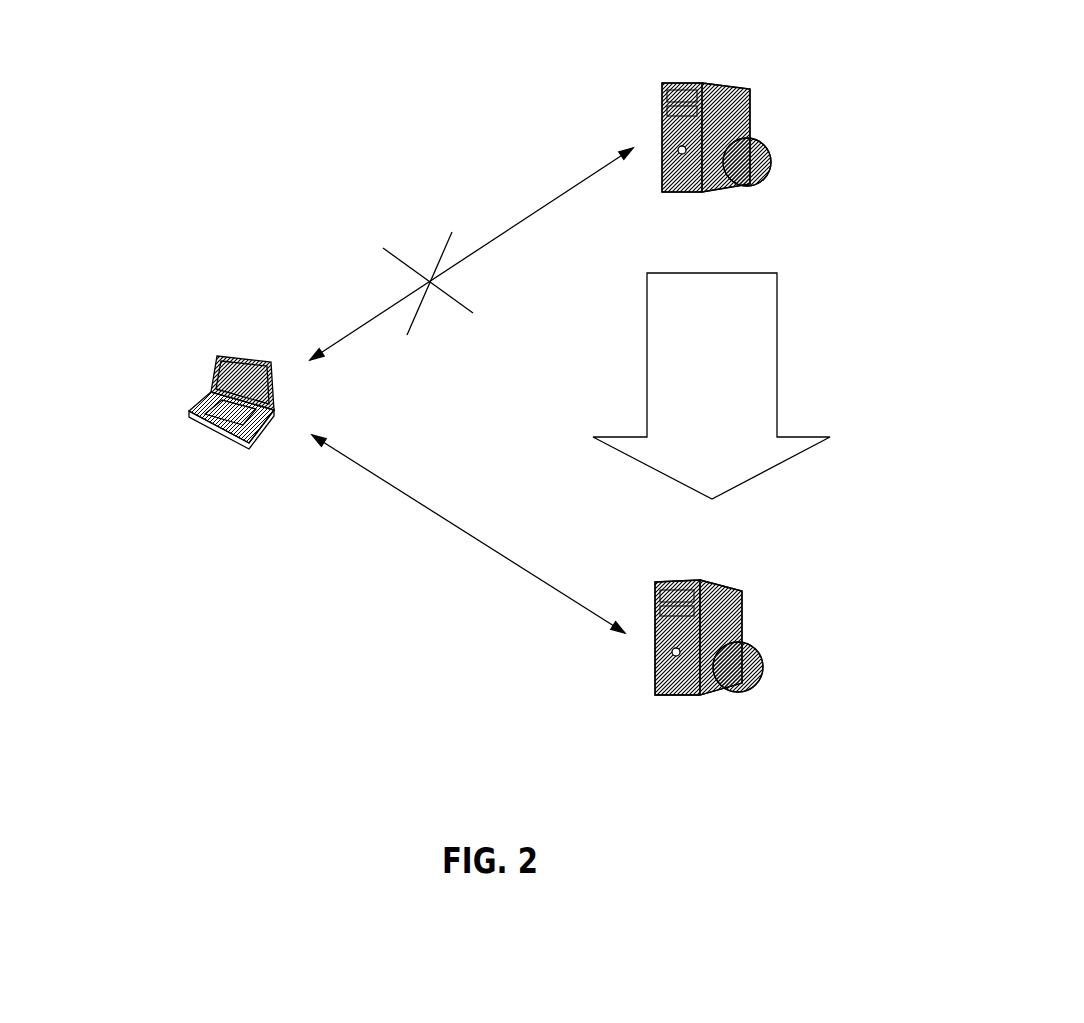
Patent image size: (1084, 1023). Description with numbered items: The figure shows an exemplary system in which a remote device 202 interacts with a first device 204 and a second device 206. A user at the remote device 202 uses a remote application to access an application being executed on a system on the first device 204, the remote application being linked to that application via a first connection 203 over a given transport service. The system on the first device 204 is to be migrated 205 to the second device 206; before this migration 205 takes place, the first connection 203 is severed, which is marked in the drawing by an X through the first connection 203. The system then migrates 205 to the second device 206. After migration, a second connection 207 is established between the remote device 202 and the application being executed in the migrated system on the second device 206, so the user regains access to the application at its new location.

The remote device 202 is at (178, 400).
The first connection 203 is at (505, 230).
The first device 204 is at (780, 140).
The system migration 205 is at (777, 408).
The second device 206 is at (778, 657).
The second connection 207 is at (475, 542).